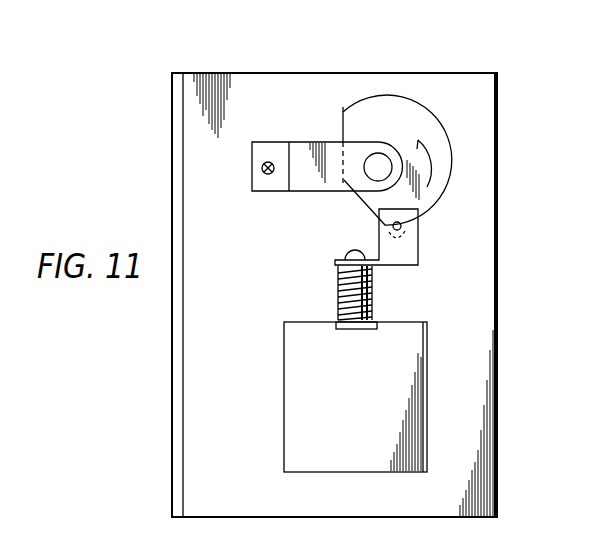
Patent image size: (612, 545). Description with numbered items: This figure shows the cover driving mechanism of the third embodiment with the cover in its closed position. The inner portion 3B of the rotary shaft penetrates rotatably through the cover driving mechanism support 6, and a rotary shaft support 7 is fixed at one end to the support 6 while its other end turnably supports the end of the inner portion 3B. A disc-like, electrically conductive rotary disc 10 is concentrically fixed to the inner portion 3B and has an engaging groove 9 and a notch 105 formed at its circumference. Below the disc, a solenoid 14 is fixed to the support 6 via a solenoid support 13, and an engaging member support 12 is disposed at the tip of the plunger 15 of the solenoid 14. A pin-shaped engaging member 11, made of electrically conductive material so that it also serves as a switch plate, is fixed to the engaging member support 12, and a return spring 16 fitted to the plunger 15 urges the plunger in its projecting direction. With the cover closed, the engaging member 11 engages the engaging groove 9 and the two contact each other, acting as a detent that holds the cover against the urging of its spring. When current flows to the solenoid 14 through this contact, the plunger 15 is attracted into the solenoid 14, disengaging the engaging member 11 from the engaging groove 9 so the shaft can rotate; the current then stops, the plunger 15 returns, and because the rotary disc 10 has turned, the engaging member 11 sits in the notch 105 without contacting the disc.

The cover driving mechanism support 6 is at (285, 88).
The rotary disc 10 is at (386, 108).
The inner portion of the rotary shaft 3B is at (357, 191).
The rotary shaft support 7 is at (270, 184).
The notch 105 is at (377, 170).
The engaging member support 12 is at (413, 254).
The engaging member 11 is at (397, 231).
The engaging groove 9 is at (410, 237).
The return spring 16 is at (358, 278).
The plunger 15 is at (372, 305).
The solenoid 14 is at (310, 396).
The solenoid support 13 is at (427, 385).